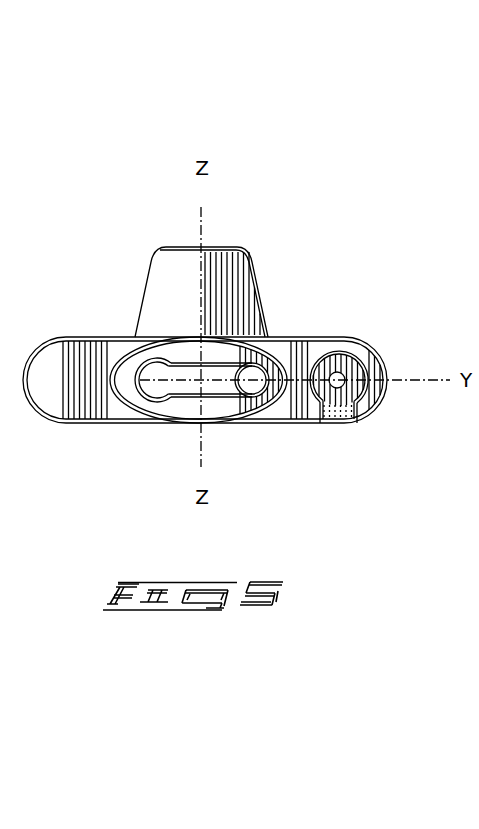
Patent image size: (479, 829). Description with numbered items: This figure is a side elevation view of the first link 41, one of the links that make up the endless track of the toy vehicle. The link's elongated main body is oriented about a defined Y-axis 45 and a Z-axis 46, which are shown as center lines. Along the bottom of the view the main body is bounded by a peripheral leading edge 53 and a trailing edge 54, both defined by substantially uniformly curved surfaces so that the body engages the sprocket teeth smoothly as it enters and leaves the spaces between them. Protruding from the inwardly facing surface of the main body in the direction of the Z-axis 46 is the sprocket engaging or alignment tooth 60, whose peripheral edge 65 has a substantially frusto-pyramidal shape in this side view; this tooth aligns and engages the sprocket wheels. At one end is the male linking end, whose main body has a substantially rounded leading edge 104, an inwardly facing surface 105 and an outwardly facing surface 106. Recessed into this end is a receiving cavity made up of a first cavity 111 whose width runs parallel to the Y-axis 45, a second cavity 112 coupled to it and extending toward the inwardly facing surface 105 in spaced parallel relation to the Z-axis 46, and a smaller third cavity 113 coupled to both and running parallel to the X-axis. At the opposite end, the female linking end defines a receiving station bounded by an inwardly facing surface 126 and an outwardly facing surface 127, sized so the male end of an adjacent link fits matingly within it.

The first link 41 is at (247, 101).
The Z-axis 46 is at (203, 213).
The peripheral edge 65 is at (234, 247).
The sprocket engaging or alignment tooth 60 is at (178, 281).
The inwardly facing surface 126 is at (43, 340).
The outwardly facing surface 127 is at (90, 427).
The trailing edge 54 is at (110, 357).
The peripheral leading edge 53 is at (275, 343).
The inwardly facing surface 105 is at (318, 335).
The leading edge 104 is at (377, 348).
The Y-axis 45 is at (428, 381).
The second cavity 112 is at (363, 393).
The first cavity 111 is at (349, 413).
The third cavity 113 is at (337, 392).
The outwardly facing surface 106 is at (280, 425).